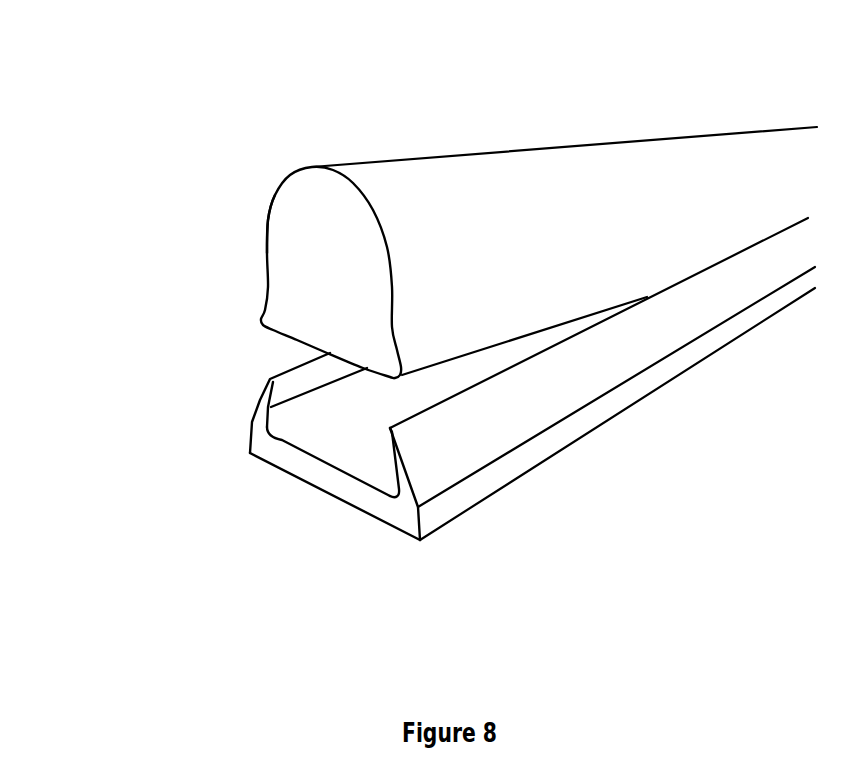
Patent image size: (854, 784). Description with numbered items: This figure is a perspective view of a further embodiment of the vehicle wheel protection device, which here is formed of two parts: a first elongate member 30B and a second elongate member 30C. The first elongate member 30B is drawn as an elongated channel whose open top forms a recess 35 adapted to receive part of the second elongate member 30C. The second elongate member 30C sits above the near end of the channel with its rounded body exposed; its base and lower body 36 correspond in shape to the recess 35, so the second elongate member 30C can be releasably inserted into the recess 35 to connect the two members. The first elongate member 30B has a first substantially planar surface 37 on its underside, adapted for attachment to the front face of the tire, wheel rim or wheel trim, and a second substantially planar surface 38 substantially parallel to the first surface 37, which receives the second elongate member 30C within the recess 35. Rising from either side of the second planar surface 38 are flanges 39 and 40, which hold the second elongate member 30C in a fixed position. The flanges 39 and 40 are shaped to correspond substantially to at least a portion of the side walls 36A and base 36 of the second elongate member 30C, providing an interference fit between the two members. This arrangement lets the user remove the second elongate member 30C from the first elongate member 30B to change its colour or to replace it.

The first elongate member 30B is at (487, 435).
The second elongate member 30C is at (315, 247).
The recess 35 is at (347, 420).
The base 36 is at (265, 316).
The side walls 36A is at (265, 237).
The first substantially planar surface 37 is at (308, 488).
The second substantially planar surface 38 is at (365, 472).
The flange 39 is at (268, 378).
The flange 40 is at (390, 430).